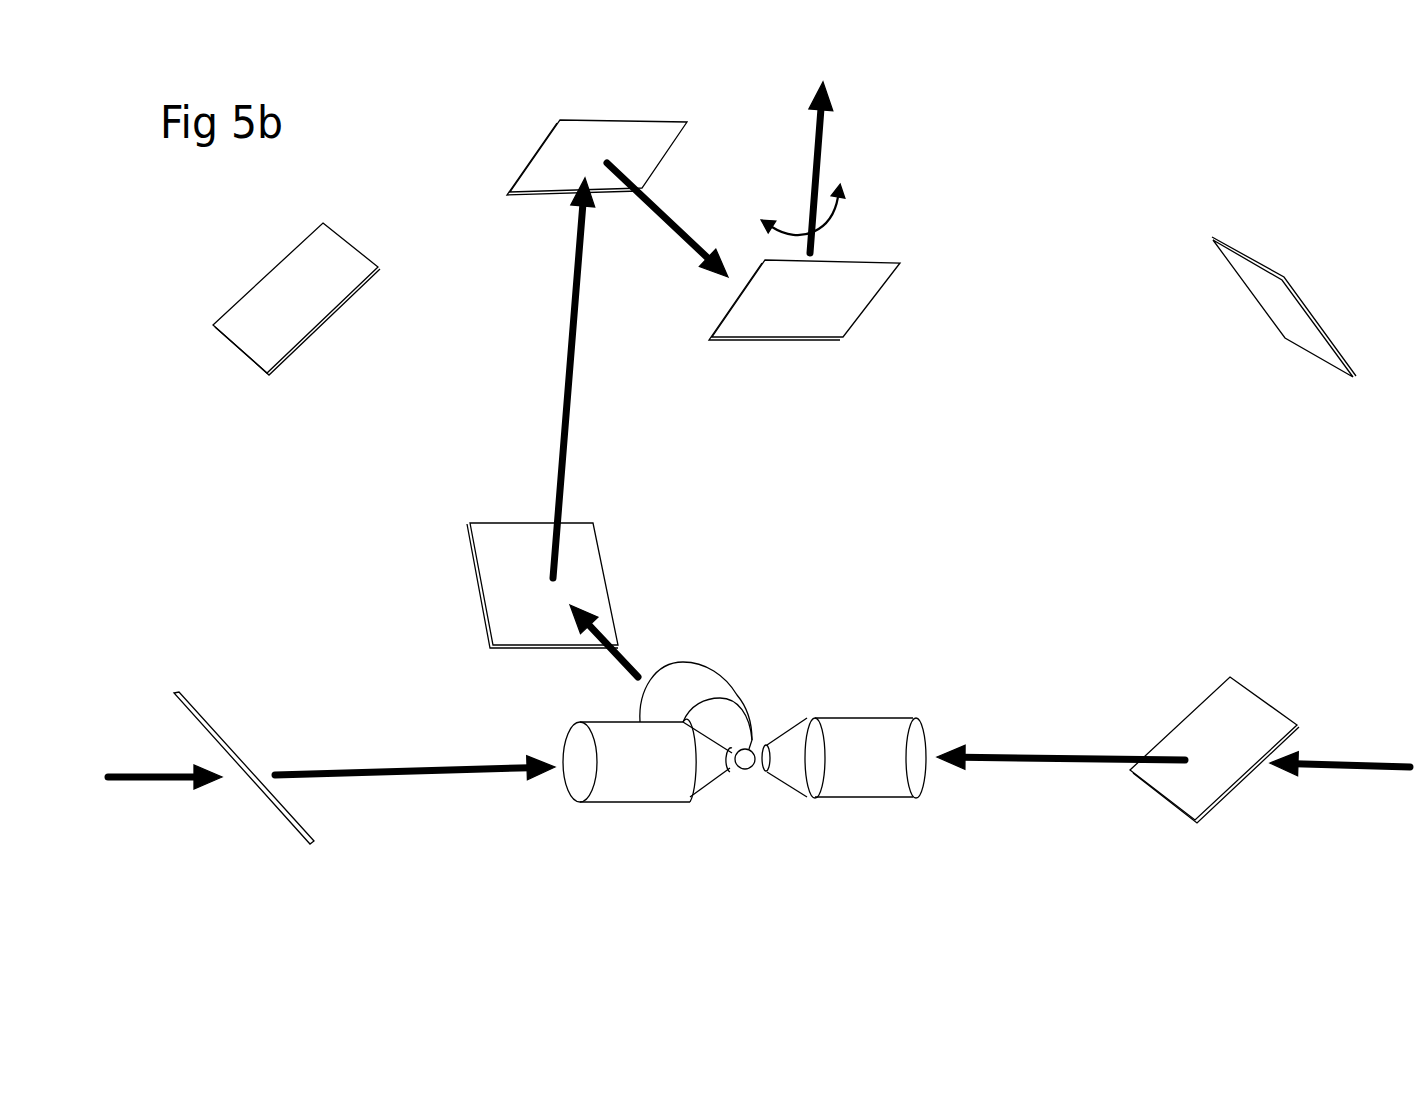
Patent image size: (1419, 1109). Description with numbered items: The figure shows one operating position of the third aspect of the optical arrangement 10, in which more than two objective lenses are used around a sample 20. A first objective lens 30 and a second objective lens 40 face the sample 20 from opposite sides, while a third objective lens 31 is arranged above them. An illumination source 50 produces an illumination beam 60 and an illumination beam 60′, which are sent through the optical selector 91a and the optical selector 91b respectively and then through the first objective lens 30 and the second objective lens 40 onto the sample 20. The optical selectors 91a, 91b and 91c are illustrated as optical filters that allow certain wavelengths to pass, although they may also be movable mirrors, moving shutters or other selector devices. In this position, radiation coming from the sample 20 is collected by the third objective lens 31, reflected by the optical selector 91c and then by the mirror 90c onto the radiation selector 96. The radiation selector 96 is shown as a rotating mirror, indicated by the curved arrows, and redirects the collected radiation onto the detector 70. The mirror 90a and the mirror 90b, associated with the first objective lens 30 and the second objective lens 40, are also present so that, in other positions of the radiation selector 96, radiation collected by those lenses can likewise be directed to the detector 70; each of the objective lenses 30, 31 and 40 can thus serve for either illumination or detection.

The optical arrangement 10 is at (759, 473).
The sample 20 is at (743, 776).
The first objective lens 30 is at (844, 777).
The third objective lens 31 is at (696, 698).
The second objective lens 40 is at (647, 778).
The illumination source 50 is at (759, 784).
The illumination beam 60 is at (1061, 738).
The illumination beam 60′ is at (415, 753).
The detector 70 is at (840, 155).
The mirror 90a is at (1284, 307).
The mirror 90b is at (296, 299).
The mirror 90c is at (583, 157).
The optical selector 91a is at (1214, 750).
The optical selector 91b is at (245, 791).
The optical selector 91c is at (525, 595).
The radiation selector 96 is at (804, 279).